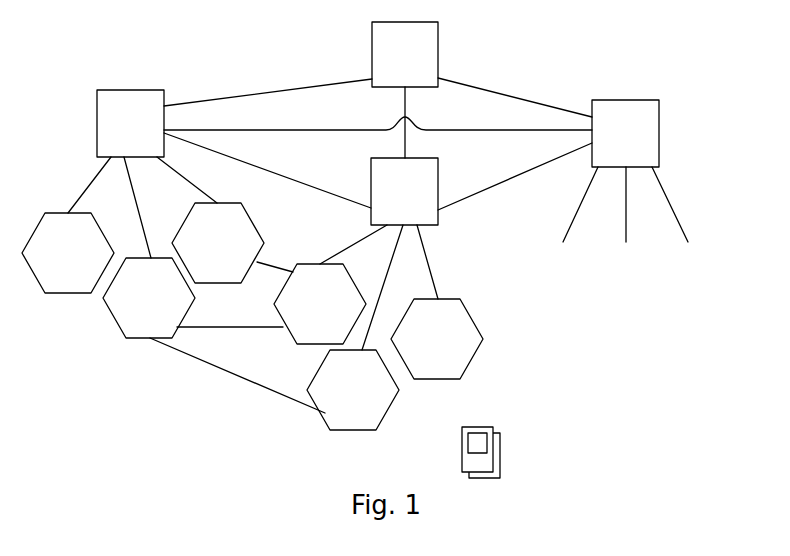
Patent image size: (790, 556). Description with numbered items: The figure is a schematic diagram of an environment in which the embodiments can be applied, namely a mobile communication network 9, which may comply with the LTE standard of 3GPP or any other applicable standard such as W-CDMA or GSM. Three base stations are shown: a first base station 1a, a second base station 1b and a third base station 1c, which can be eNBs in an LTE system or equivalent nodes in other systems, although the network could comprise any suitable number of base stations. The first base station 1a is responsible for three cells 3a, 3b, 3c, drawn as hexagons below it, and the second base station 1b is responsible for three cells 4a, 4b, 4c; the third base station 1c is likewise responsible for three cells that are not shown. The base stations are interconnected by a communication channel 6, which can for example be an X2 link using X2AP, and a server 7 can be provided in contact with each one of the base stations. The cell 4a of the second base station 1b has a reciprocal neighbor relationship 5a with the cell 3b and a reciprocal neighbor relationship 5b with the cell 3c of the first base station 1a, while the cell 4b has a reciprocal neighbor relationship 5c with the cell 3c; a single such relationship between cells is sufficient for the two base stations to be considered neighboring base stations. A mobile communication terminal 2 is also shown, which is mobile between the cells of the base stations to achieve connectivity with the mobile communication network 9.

The first base station 1a is at (117, 124).
The second base station 1b is at (390, 191).
The third base station 1c is at (611, 134).
The mobile communication terminal 2 is at (495, 438).
The cell 3a is at (53, 246).
The cell 3b is at (203, 236).
The cell 3c is at (134, 291).
The cell 4a is at (305, 297).
The cell 4b is at (338, 383).
The cell 4c is at (422, 332).
The reciprocal neighbor relationship 5a is at (266, 263).
The reciprocal neighbor relationship 5b is at (245, 327).
The reciprocal neighbor relationship 5c is at (241, 381).
The communication channel 6 is at (490, 185).
The server 7 is at (397, 66).
The mobile communication network 9 is at (594, 57).